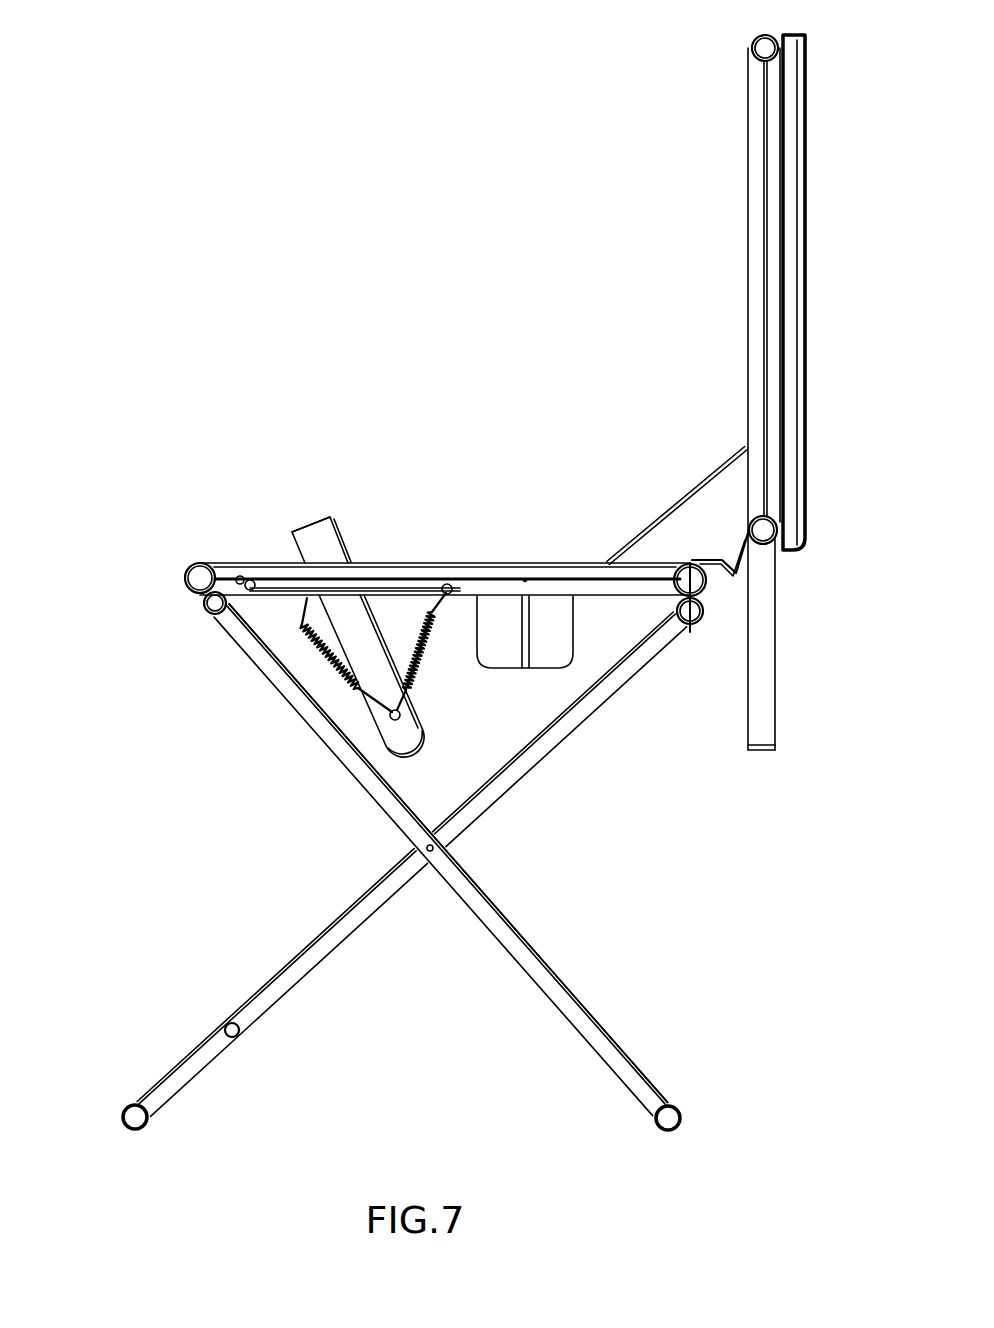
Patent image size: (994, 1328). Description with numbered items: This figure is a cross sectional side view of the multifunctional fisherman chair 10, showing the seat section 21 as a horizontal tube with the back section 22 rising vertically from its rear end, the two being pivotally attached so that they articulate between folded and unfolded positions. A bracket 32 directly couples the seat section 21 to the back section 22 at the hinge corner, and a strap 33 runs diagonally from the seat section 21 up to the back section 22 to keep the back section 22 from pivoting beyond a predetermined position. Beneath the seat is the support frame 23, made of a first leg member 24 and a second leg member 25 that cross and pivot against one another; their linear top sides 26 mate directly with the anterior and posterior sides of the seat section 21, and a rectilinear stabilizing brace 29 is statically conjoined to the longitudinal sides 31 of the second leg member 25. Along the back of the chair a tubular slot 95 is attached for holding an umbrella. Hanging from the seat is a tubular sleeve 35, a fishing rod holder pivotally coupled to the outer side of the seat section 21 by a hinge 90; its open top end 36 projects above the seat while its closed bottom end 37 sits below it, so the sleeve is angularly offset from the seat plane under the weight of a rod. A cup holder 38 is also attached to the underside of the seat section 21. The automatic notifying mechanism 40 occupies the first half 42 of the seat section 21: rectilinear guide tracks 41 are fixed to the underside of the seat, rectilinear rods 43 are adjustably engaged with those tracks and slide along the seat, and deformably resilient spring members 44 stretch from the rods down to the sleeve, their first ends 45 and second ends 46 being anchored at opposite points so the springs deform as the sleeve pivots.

The multifunctional fisherman chair 10 is at (130, 187).
The seat section 21 is at (445, 518).
The back section 22 is at (705, 392).
The support frame 23 is at (532, 858).
The first leg member 24 is at (468, 867).
The second leg member 25 is at (405, 870).
The linear top sides 26 is at (202, 598).
The rectilinear stabilizing brace 29 is at (276, 1080).
The longitudinal sides 31 is at (525, 940).
The brackets 32 is at (733, 576).
The straps 33 is at (683, 490).
The tubular sleeves 35 is at (280, 464).
The open top end 36 is at (300, 528).
The closed bottom end 37 is at (407, 752).
The cup holders 38 is at (510, 670).
The automatic notifying mechanism 40 is at (310, 598).
The rectilinear guide tracks 41 is at (395, 570).
The first half of the seat section 42 is at (152, 560).
The rectilinear rods 43 is at (447, 568).
The deformably resilient spring members 44 is at (331, 716).
The first ends 45 is at (388, 707).
The second ends 46 is at (240, 576).
The hinges 90 is at (338, 568).
The tubular slot 95 is at (796, 166).